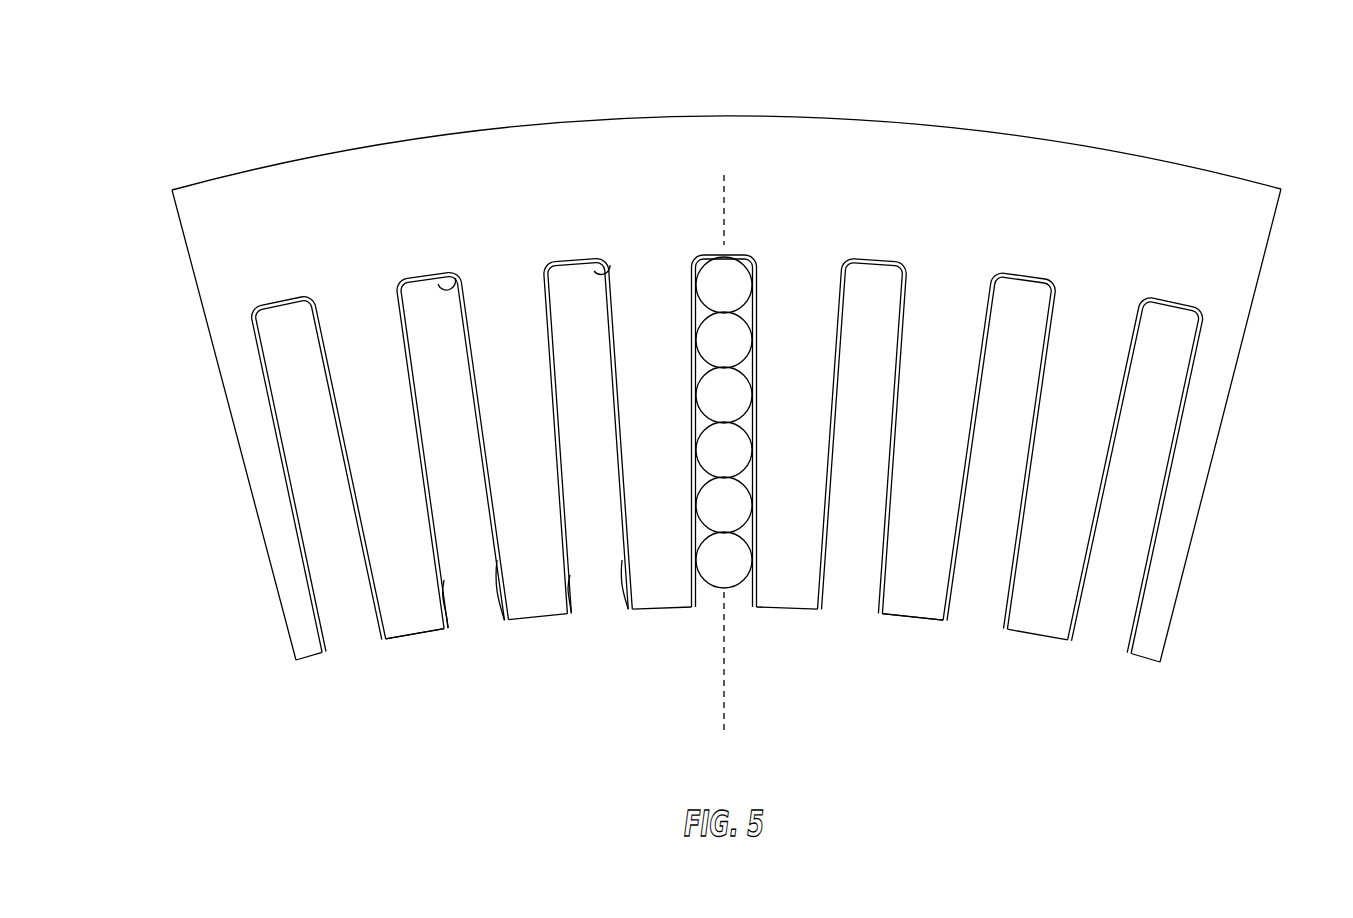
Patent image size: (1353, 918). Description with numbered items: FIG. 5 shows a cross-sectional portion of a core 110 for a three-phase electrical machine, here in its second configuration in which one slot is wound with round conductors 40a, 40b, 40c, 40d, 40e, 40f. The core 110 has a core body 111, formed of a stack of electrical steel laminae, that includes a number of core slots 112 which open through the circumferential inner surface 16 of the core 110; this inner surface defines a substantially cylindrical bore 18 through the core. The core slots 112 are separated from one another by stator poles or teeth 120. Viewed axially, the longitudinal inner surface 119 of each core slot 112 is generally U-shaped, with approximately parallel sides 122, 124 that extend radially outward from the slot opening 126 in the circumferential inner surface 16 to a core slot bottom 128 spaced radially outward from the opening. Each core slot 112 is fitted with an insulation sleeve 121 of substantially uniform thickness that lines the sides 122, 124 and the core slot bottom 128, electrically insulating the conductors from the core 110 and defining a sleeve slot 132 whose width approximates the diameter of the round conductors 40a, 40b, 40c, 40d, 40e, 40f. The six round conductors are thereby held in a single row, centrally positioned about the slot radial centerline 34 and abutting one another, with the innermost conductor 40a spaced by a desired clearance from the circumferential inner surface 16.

The core 110 is at (1157, 145).
The core body 111 is at (1063, 142).
The cylindrical bore 18 is at (940, 750).
The circumferential inner surface 16 is at (417, 637).
The teeth 120 is at (925, 460).
The longitudinal inner surface 119 is at (280, 305).
The core slot 112 is at (418, 320).
The core slot bottom 128 is at (453, 273).
The side 122 is at (443, 593).
The side 124 is at (500, 563).
The slot opening 126 is at (483, 632).
The insulation sleeve 121 is at (750, 593).
The sleeve slot 132 is at (710, 593).
The slot radial centerline 34 is at (728, 215).
The round conductor 40a is at (724, 560).
The round conductor 40b is at (724, 505).
The round conductor 40c is at (724, 450).
The round conductor 40d is at (724, 395).
The round conductor 40e is at (724, 340).
The round conductor 40f is at (724, 285).